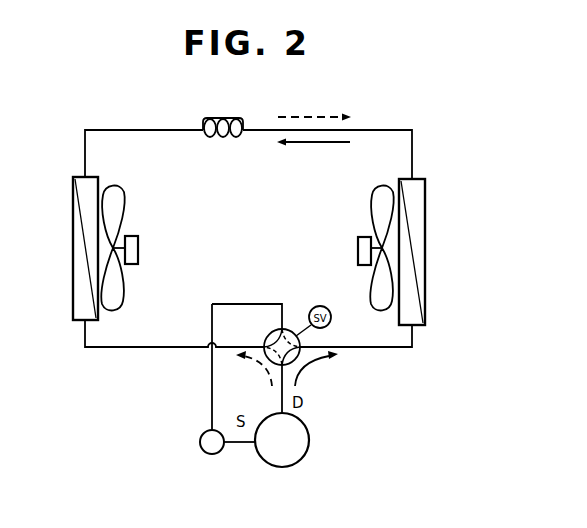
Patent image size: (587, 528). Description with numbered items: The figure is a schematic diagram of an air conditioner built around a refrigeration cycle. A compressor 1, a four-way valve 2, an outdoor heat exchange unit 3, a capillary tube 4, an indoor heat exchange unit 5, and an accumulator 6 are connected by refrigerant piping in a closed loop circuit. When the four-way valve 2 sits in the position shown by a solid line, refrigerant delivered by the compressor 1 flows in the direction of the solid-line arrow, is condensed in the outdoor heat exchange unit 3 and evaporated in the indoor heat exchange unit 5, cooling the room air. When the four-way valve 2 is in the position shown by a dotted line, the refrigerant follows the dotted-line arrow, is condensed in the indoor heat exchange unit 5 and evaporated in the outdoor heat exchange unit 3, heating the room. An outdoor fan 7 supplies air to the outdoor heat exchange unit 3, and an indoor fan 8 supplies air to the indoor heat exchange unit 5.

The compressor 1 is at (309, 442).
The four-way valve 2 is at (266, 337).
The outdoor heat exchange unit 3 is at (426, 254).
The capillary tube 4 is at (238, 119).
The indoor heat exchange unit 5 is at (73, 256).
The accumulator 6 is at (200, 442).
The outdoor fan 7 is at (360, 237).
The indoor fan 8 is at (133, 236).